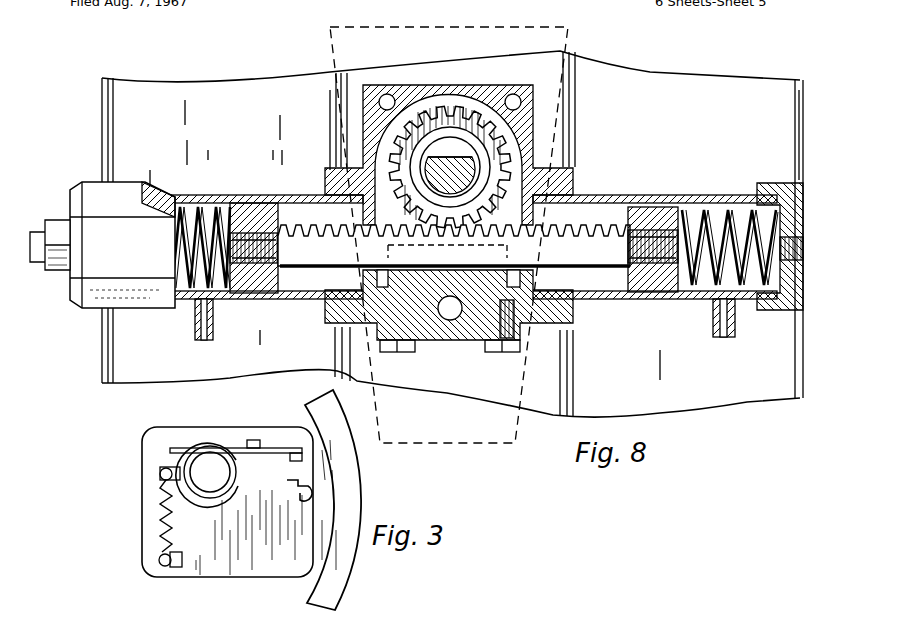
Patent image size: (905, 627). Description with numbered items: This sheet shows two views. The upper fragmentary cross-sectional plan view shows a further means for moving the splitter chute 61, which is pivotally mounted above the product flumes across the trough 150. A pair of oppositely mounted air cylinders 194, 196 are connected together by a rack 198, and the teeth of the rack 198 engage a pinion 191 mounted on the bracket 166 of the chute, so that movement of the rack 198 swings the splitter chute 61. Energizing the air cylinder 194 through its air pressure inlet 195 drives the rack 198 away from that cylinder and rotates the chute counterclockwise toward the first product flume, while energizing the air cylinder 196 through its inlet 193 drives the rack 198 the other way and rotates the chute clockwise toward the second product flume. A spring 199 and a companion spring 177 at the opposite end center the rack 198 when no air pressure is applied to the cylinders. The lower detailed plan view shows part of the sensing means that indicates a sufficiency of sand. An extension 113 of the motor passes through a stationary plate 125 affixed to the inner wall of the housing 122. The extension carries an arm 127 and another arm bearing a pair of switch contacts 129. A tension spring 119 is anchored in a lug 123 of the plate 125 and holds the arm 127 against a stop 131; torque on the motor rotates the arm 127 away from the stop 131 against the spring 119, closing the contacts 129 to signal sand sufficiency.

In FIG. 8, the trough 150 is at (100, 372).
In FIG. 8, the spring 177 is at (228, 196).
In FIG. 8, the air cylinder 194 is at (309, 207).
In FIG. 8, the pinion 191 is at (397, 208).
In FIG. 8, the bracket 166 is at (470, 167).
In FIG. 8, the rack 198 is at (585, 223).
In FIG. 8, the spring 199 is at (727, 205).
In FIG. 8, the air cylinder 196 is at (636, 298).
In FIG. 8, the inlet 193 is at (714, 325).
In FIG. 8, the air pressure inlet 195 is at (214, 330).
In FIG. 8, the splitter chute 61 is at (470, 442).
In FIG. 3, the extension 113 is at (215, 460).
In FIG. 3, the stop 131 is at (258, 445).
In FIG. 3, the arm 127 is at (268, 455).
In FIG. 3, the switch contacts 129 is at (300, 482).
In FIG. 3, the housing 122 is at (352, 500).
In FIG. 3, the spring 119 is at (158, 518).
In FIG. 3, the lug 123 is at (178, 568).
In FIG. 3, the plate 125 is at (253, 570).